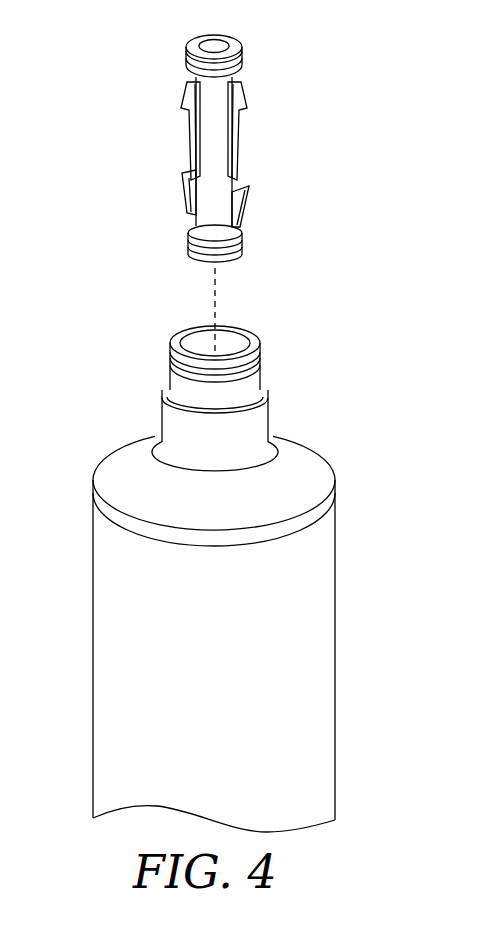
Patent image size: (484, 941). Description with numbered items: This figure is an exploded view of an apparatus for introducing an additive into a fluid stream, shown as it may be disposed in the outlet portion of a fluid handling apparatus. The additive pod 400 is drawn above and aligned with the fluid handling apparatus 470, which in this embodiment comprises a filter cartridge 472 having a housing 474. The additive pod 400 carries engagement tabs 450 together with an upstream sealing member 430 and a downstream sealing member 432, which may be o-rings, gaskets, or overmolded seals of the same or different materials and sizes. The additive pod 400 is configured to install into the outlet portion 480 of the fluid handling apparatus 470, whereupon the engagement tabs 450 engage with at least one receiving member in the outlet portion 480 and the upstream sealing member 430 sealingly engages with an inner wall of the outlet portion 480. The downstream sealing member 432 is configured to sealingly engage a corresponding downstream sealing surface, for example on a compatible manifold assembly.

The additive pod 400 is at (252, 150).
The downstream sealing member 432 is at (244, 58).
The engagement tabs 450 is at (246, 196).
The upstream sealing member 430 is at (242, 242).
The fluid handling apparatus 470 is at (220, 566).
The outlet portion 480 is at (236, 342).
The housing 474 is at (334, 568).
The filter cartridge 472 is at (307, 649).